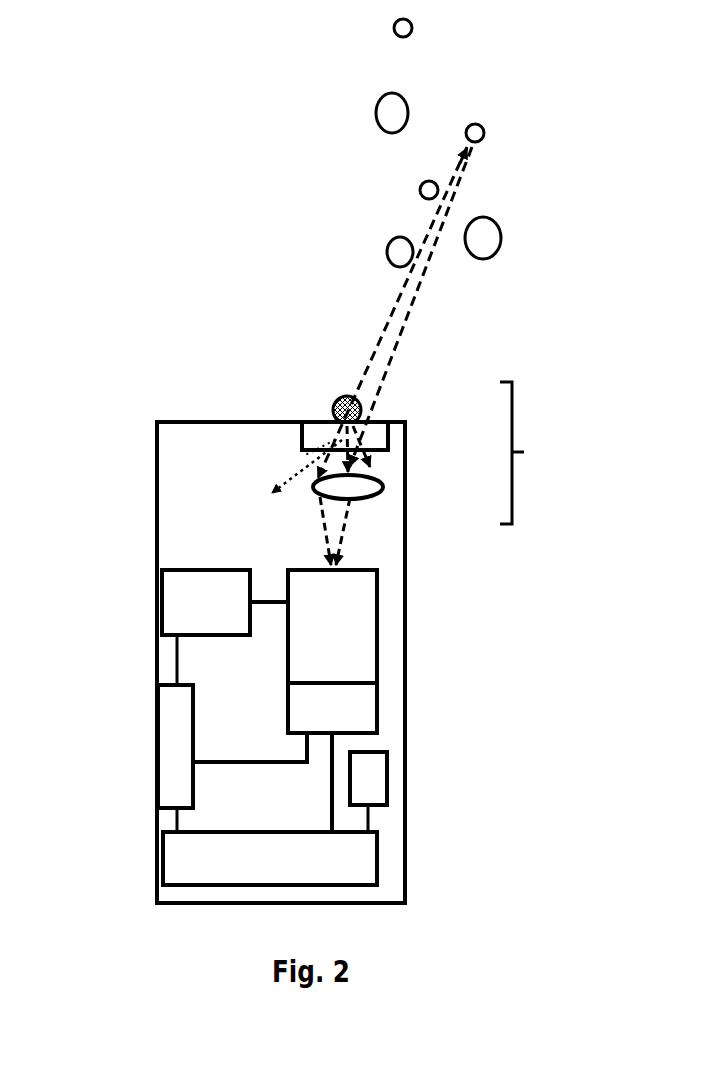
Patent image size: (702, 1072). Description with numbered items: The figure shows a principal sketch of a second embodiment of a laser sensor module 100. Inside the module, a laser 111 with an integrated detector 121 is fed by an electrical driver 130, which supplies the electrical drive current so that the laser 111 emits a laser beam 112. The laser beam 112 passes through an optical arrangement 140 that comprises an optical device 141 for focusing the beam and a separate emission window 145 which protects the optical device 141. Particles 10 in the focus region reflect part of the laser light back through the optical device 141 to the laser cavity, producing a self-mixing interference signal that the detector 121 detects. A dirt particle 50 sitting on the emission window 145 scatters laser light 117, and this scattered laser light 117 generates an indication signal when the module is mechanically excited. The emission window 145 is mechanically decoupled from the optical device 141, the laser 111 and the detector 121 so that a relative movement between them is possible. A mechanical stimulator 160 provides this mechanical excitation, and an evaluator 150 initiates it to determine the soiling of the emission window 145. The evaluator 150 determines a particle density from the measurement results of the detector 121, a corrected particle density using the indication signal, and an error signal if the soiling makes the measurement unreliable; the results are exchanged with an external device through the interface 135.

The particles 10 is at (485, 136).
The dirt particle 50 is at (334, 405).
The laser sensor module 100 is at (157, 475).
The laser 111 is at (288, 648).
The laser beam 112 is at (397, 305).
The scattered laser light 117 is at (270, 478).
The detector 121 is at (288, 705).
The electrical driver 130 is at (162, 617).
The interface 135 is at (163, 768).
The optical arrangement 140 is at (437, 453).
The optical device 141 is at (385, 487).
The emission window 145 is at (405, 432).
The evaluator 150 is at (170, 865).
The mechanical stimulator 160 is at (387, 777).